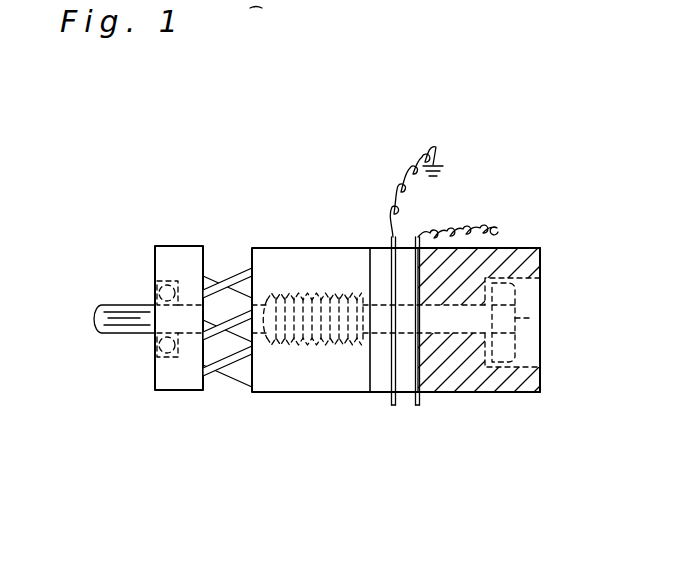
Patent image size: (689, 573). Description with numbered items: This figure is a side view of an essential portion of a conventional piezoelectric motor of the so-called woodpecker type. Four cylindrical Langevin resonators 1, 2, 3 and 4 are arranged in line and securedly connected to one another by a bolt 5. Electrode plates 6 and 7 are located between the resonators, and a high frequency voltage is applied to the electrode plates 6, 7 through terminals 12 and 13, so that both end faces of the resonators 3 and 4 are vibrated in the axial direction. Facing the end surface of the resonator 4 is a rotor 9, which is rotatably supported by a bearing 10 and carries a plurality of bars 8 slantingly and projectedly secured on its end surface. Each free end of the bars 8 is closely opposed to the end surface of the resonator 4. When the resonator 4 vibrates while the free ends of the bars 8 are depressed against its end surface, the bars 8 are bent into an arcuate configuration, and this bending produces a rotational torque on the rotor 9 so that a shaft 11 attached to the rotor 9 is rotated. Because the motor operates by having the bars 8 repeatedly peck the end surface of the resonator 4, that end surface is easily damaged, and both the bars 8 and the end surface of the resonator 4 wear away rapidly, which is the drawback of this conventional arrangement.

The Langevin resonator 1 is at (378, 248).
The Langevin resonator 2 is at (405, 248).
The Langevin resonator 3 is at (518, 248).
The Langevin resonator 4 is at (288, 248).
The bolt 5 is at (515, 318).
The electrode plate 6 is at (390, 405).
The electrode plate 7 is at (420, 405).
The bars 8 is at (226, 262).
The rotor 9 is at (178, 246).
The bearing 10 is at (165, 350).
The shaft 11 is at (100, 300).
The terminal 12 is at (412, 152).
The terminal 13 is at (478, 222).